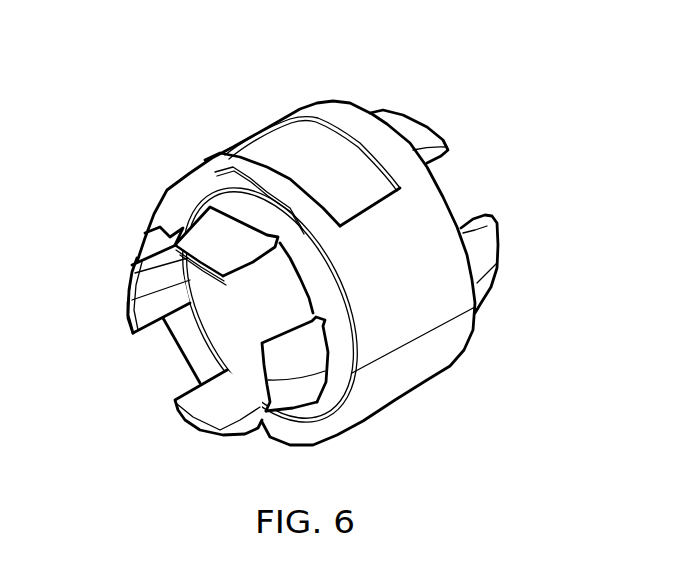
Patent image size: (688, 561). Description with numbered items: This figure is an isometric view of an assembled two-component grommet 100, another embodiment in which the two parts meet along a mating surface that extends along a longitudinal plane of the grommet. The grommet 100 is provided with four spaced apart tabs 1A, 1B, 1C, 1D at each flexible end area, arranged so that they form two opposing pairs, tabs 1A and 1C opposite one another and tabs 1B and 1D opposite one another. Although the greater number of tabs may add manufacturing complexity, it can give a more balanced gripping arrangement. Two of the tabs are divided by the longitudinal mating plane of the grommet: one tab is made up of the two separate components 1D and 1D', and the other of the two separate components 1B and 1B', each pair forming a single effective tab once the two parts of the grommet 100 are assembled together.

The sleeve / coupling member 100 is at (472, 103).
The tab 1A is at (217, 227).
The tab 1B is at (125, 285).
The tab component 1B' is at (100, 306).
The tab 1C is at (197, 405).
The tab 1D is at (369, 368).
The tab component 1D' is at (341, 432).